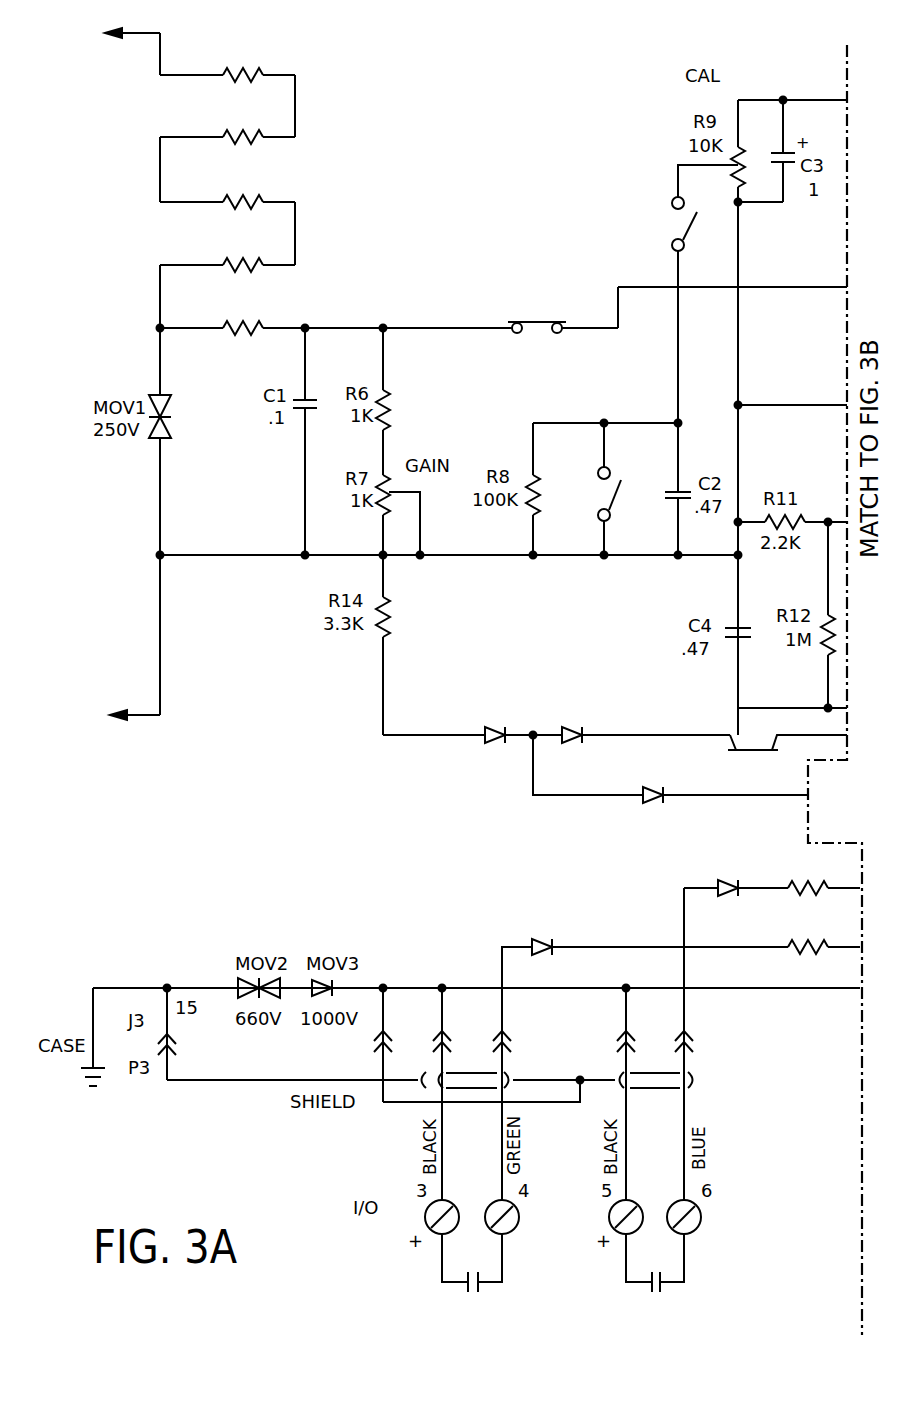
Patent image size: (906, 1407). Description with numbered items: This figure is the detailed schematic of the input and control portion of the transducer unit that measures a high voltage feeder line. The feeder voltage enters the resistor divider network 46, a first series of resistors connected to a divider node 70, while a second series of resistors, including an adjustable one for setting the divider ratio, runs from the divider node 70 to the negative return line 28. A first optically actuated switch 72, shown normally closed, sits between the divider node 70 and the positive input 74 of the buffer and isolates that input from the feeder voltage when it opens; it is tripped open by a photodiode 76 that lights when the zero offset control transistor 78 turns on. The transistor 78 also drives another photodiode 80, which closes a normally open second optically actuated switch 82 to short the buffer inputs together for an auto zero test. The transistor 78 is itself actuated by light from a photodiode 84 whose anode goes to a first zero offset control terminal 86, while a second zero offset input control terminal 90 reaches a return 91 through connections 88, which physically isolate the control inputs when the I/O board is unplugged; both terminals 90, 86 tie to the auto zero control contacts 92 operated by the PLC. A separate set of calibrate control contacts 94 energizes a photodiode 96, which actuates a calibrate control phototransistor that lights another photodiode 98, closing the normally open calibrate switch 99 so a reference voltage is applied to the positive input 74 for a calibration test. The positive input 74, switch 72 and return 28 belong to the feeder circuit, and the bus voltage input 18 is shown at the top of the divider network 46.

The bus voltage input terminal BP1 18 is at (160, 40).
The resistor divider network 46 is at (318, 107).
The divider node 70 is at (386, 325).
The first optically actuated switch 72 is at (537, 333).
The positive input of the buffer 74 is at (823, 289).
The calibrate switch 99 is at (690, 228).
The second optically actuated switch 82 is at (614, 497).
The zero offset control transistor 78 is at (754, 748).
The photodiode 80 is at (585, 733).
The photodiode 76 is at (497, 742).
The photodiode 98 is at (652, 801).
The negative return line 28 is at (142, 716).
The return 91 is at (386, 984).
The photodiode 84 is at (545, 952).
The connections 88 is at (742, 1028).
The photodiode 96 is at (725, 895).
The second zero offset input control terminal 90 is at (437, 1232).
The first zero offset control terminal 86 is at (510, 1230).
The control contacts 92 is at (468, 1292).
The control contacts 94 is at (662, 1291).